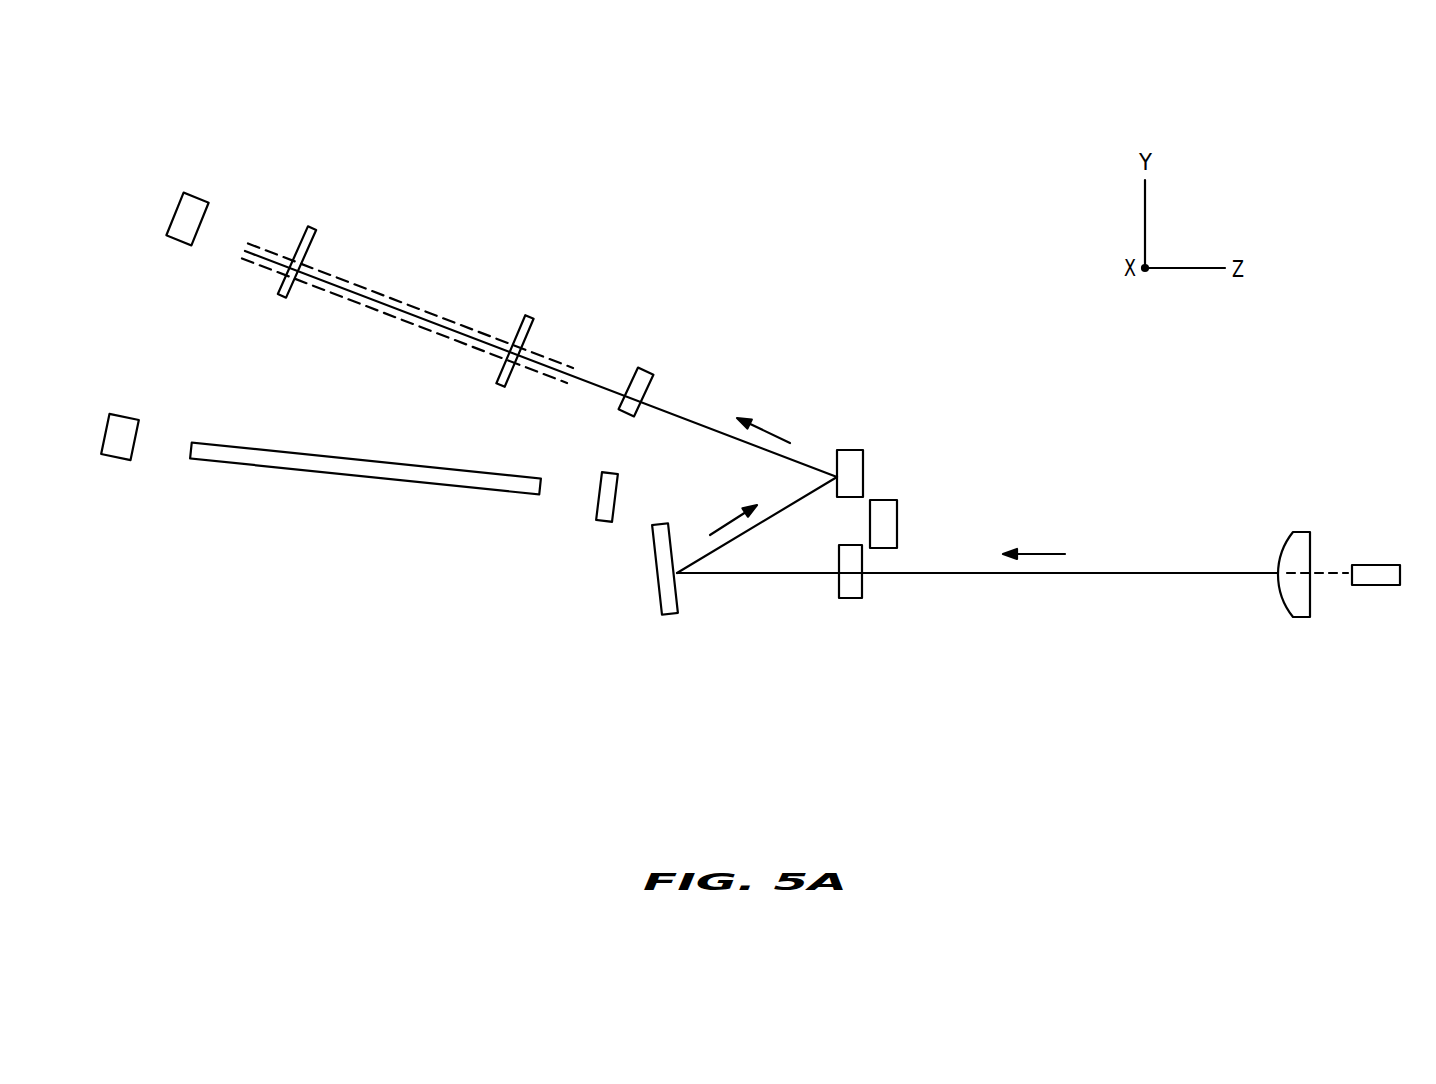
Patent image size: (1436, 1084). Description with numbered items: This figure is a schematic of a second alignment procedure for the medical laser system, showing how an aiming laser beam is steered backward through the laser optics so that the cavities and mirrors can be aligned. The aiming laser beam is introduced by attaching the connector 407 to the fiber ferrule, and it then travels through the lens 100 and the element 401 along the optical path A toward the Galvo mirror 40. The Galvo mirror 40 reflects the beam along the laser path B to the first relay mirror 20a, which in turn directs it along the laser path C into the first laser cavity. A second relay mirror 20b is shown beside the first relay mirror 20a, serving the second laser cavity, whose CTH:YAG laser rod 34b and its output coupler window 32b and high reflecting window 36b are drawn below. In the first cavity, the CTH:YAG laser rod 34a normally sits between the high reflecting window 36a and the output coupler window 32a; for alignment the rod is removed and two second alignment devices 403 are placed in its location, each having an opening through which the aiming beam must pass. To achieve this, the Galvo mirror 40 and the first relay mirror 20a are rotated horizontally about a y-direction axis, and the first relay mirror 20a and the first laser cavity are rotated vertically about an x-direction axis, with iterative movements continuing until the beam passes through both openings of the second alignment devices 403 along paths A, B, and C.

The relay mirror 20a is at (855, 453).
The relay mirror 20b is at (885, 502).
The output coupler window 32a is at (655, 373).
The output coupler window 32b is at (618, 476).
The CTH:YAG laser rod 34a is at (403, 301).
The CTH:YAG laser rod 34b is at (338, 474).
The high reflecting window 36a is at (190, 207).
The high reflecting window 36b is at (117, 428).
The Galvo mirror 40 is at (658, 592).
The lens 100 is at (1293, 532).
The optical element 401 is at (850, 585).
The second alignment device 403 is at (305, 258).
The connector 407 is at (1388, 565).
The optical path A is at (1088, 575).
The laser path B is at (767, 518).
The laser path C is at (597, 383).